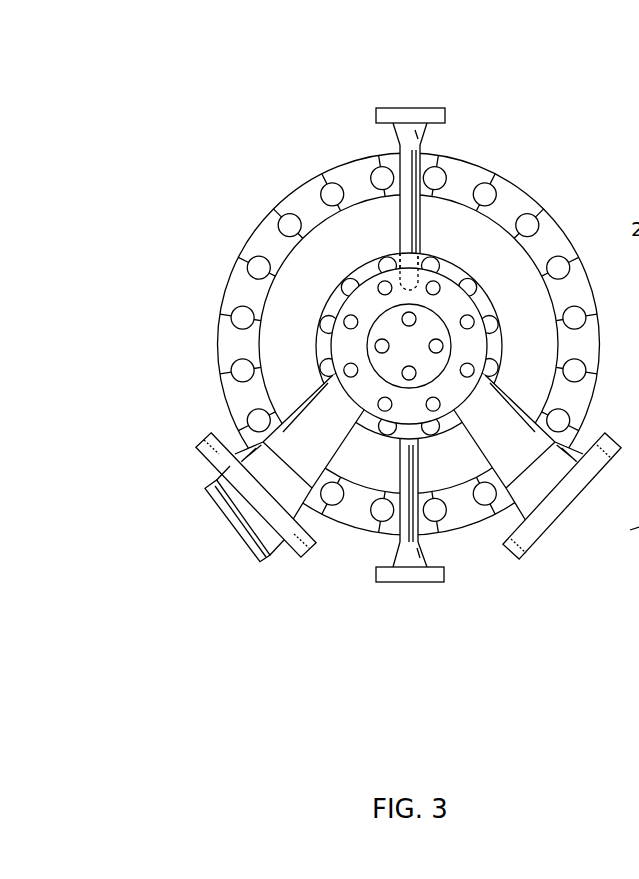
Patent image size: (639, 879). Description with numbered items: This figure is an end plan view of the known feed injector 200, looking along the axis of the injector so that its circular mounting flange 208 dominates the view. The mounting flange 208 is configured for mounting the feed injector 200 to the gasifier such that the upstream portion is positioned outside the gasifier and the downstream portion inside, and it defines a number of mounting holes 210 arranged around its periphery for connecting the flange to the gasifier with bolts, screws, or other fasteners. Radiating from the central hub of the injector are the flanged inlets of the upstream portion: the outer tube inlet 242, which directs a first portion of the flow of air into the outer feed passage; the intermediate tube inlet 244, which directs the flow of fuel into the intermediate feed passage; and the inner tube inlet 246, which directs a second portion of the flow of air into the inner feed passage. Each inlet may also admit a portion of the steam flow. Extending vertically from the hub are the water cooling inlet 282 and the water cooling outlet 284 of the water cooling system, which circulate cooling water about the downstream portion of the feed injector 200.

The feed injector 200 is at (252, 102).
The mounting flange 208 is at (313, 183).
The mounting holes 210 is at (253, 247).
The outer tube inlet 242 is at (205, 458).
The intermediate tube inlet 244 is at (550, 532).
The inner tube inlet 246 is at (213, 523).
The water cooling inlet 282 is at (420, 582).
The water cooling outlet 284 is at (432, 107).